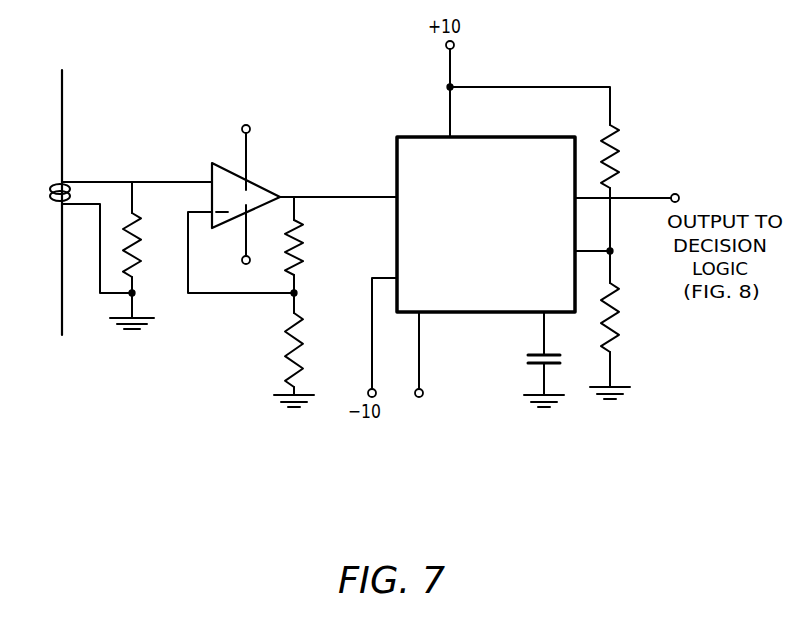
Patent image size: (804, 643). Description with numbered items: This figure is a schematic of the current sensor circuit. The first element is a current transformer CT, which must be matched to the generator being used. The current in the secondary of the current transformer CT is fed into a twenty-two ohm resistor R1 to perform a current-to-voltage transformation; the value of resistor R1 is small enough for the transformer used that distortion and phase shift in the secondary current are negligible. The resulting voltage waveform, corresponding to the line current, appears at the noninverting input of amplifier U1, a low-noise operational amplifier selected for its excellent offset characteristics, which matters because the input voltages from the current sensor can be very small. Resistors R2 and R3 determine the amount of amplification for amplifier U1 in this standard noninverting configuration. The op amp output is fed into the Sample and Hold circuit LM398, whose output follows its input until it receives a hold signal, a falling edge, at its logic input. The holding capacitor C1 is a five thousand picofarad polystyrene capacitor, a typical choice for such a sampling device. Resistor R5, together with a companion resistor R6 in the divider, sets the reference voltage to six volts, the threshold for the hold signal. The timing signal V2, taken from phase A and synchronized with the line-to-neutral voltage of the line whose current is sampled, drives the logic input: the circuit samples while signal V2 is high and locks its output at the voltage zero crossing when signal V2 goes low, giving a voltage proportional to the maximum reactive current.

The current transformer CT is at (115, 235).
The resistor R1 is at (146, 255).
The amplifier U1 is at (274, 193).
The resistor R2 is at (310, 350).
The resistor R3 is at (310, 245).
The sample and hold circuit LM398 is at (486, 224).
The timing signal V2 is at (420, 400).
The holding capacitor C1 is at (527, 359).
The resistor R5 is at (630, 188).
The resistor 30k R6 is at (625, 325).